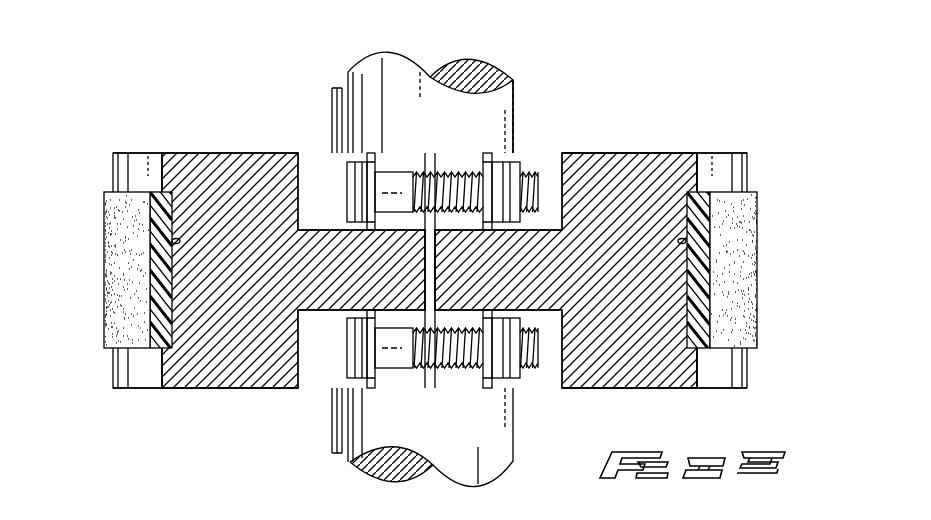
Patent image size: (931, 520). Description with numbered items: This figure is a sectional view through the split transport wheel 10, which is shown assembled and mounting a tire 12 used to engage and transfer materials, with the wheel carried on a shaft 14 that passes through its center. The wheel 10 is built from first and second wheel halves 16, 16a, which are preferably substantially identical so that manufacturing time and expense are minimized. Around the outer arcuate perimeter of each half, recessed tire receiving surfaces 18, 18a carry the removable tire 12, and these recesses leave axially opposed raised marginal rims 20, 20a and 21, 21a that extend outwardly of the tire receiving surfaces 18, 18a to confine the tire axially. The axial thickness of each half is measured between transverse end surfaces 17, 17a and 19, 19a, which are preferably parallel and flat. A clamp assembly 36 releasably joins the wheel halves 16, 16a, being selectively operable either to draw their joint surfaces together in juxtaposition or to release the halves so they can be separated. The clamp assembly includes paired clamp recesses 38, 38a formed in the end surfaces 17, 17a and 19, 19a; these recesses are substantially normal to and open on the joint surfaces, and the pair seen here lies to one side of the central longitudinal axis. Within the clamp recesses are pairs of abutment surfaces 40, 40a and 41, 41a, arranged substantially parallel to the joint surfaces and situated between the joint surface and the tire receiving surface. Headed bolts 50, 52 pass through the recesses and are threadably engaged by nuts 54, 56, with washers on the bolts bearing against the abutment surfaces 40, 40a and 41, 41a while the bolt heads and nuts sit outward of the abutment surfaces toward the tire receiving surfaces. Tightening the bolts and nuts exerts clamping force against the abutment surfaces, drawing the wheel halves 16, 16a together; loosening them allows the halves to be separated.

The split transport wheel 10 is at (425, 231).
The tire 12 is at (764, 283).
The shaft 14 is at (472, 72).
The first wheel half 16 is at (655, 153).
The second wheel half 16a is at (200, 153).
The transverse end surface 17 is at (655, 390).
The transverse end surface 17a is at (200, 388).
The tire receiving surface 18 is at (687, 248).
The tire receiving surface 18a is at (172, 250).
The transverse end surface 19 is at (612, 153).
The transverse end surface 19a is at (268, 123).
The raised marginal rim 20 is at (735, 177).
The raised marginal rim 20a is at (125, 177).
The raised marginal rim 21 is at (735, 373).
The raised marginal rim 21a is at (125, 373).
The clamp assembly 36 is at (520, 146).
The clamp recess 38 is at (548, 165).
The clamp recess 38a is at (323, 167).
The abutment surface 40 is at (483, 163).
The abutment surface 40a is at (376, 165).
The abutment surface 41 is at (485, 380).
The abutment surface 41a is at (380, 376).
The headed bolt 50 is at (352, 352).
The headed bolt 52 is at (352, 197).
The nut 54 is at (510, 372).
The nut 56 is at (517, 213).